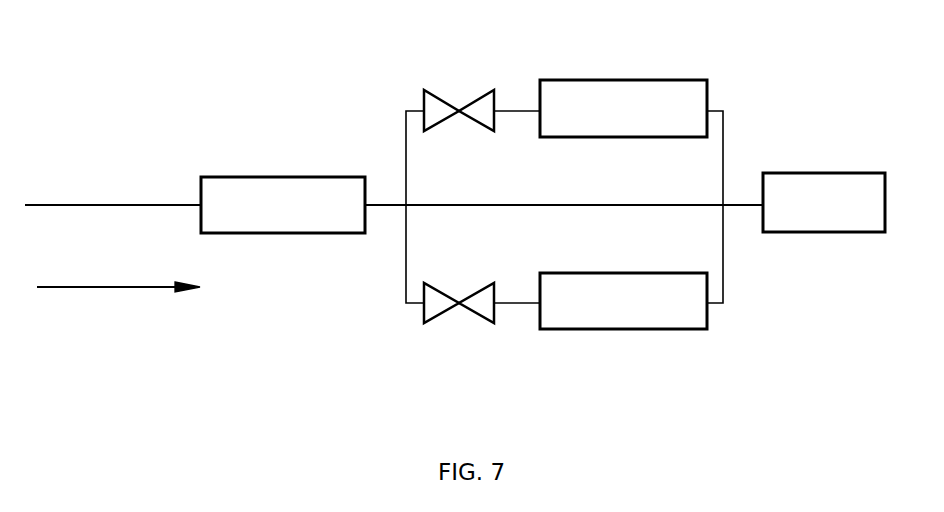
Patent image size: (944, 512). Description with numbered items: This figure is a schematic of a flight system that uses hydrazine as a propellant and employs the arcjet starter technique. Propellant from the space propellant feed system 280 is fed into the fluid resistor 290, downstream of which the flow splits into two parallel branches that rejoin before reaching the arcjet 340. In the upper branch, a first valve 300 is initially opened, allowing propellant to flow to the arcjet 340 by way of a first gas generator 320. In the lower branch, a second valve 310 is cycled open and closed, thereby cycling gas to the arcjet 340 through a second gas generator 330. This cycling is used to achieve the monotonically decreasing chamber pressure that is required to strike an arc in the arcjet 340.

The space propellant feed system 280 is at (132, 287).
The fluid resistor 290 is at (270, 176).
The first valve 300 is at (452, 102).
The second valve 310 is at (468, 312).
The first gas generator 320 is at (590, 79).
The second gas generator 330 is at (603, 330).
The arcjet 340 is at (808, 172).